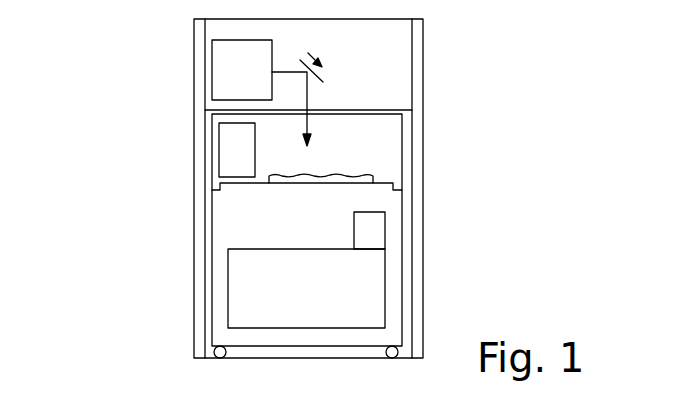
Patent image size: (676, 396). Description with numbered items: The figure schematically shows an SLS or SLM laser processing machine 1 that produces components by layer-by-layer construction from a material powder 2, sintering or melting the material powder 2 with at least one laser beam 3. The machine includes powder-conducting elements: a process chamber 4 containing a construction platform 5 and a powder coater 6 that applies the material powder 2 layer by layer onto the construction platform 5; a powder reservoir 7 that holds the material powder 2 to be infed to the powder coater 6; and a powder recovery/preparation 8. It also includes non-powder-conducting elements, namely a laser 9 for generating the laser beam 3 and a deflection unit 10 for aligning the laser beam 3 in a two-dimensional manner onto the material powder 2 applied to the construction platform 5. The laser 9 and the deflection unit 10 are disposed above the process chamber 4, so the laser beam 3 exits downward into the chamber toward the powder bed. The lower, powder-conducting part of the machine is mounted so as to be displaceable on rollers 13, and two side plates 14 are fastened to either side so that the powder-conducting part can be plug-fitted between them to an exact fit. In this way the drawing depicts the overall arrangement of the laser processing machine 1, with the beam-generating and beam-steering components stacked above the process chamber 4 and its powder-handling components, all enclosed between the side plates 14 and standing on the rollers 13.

The SLS or SLM laser processing machine 1 is at (80, 57).
The material powder 2 is at (365, 174).
The laser beam 3 is at (308, 103).
The process chamber 4 is at (378, 140).
The construction platform 5 is at (400, 189).
The powder coater 6 is at (237, 148).
The powder reservoir 7 is at (237, 288).
The powder recovery/preparation 8 is at (370, 232).
The laser 9 is at (232, 78).
The deflection unit 10 is at (323, 80).
The rollers 13 is at (213, 353).
The side plates 14 is at (200, 47).